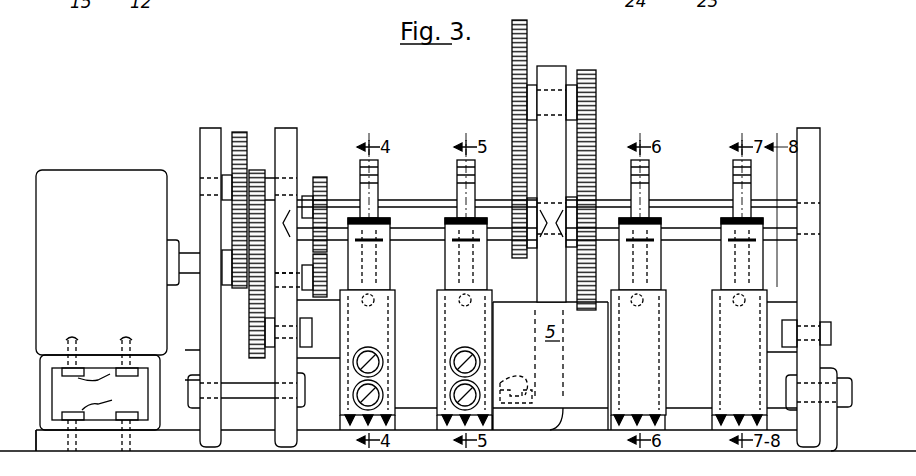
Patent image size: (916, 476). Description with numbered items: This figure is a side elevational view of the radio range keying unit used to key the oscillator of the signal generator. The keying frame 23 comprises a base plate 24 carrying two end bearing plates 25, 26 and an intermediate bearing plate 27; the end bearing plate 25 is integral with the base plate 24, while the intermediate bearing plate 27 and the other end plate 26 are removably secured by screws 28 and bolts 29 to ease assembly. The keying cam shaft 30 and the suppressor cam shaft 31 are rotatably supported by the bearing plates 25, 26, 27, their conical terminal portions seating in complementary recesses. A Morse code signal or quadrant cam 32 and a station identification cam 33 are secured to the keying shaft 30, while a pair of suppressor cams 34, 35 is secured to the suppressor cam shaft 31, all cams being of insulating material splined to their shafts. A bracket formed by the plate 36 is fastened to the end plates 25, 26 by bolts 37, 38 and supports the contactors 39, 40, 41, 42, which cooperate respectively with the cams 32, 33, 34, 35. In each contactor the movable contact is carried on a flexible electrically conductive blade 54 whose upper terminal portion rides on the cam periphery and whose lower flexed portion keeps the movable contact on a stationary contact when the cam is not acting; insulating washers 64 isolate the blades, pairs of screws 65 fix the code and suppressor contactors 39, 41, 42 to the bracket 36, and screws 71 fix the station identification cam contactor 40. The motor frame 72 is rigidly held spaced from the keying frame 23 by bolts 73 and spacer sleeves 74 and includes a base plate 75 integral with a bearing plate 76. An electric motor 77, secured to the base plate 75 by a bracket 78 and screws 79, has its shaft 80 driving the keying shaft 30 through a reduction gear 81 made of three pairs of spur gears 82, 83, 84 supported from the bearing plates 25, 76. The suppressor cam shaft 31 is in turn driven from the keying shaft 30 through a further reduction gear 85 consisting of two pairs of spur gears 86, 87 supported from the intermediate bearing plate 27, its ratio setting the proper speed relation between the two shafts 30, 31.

The keying frame 23 is at (700, 452).
The base plate 24 is at (588, 452).
The end bearing plate 25 is at (290, 133).
The end bearing plate 26 is at (822, 142).
The intermediate bearing plate 27 is at (565, 68).
The screws 28 is at (516, 379).
The bolts 29 is at (855, 394).
The keying cam shaft 30 is at (408, 203).
The suppressor cam shaft 31 is at (690, 201).
The Morse code signal cam 32 is at (380, 181).
The station identification cam 33 is at (458, 181).
The suppressor cam 34 is at (650, 181).
The suppressor cam 35 is at (733, 169).
The bracket plate 36 is at (602, 405).
The bolt 37 is at (311, 346).
The bolt 38 is at (832, 333).
The Morse code cam contactor 39 is at (395, 312).
The station identification cam contactor 40 is at (494, 304).
The suppressor cam contactor 41 is at (664, 305).
The suppressor cam contactor 42 is at (718, 320).
The flexible electrically conductive blade 54 is at (390, 262).
The insulating washers 64 is at (355, 398).
The screws 65 is at (450, 392).
The screws 71 is at (450, 362).
The motor frame 72 is at (188, 452).
The bolts 73 is at (182, 385).
The spacer sleeves 74 is at (240, 408).
The base plate 75 is at (55, 452).
The bearing plate 76 is at (200, 140).
The electric motor 77 is at (53, 177).
The bracket 78 is at (42, 388).
The screws 79 is at (100, 394).
The motor shaft 80 is at (186, 283).
The reduction gear 81 is at (272, 134).
The spur gears 82 is at (232, 231).
The spur gears 83 is at (283, 196).
The spur gears 84 is at (327, 292).
The reduction gear 85 is at (566, 49).
The spur gears 86 is at (512, 194).
The spur gears 87 is at (597, 141).